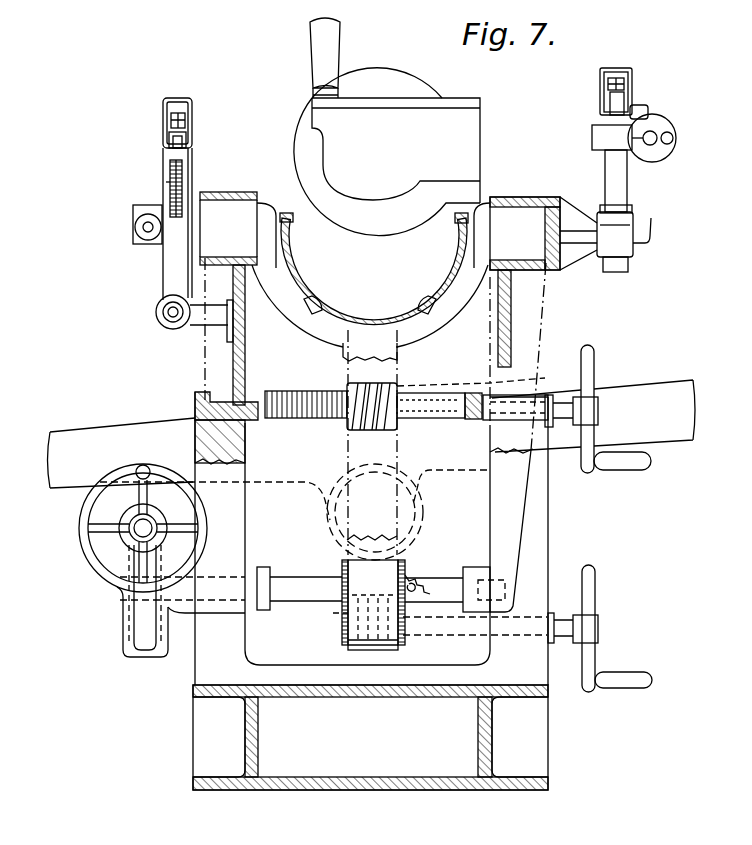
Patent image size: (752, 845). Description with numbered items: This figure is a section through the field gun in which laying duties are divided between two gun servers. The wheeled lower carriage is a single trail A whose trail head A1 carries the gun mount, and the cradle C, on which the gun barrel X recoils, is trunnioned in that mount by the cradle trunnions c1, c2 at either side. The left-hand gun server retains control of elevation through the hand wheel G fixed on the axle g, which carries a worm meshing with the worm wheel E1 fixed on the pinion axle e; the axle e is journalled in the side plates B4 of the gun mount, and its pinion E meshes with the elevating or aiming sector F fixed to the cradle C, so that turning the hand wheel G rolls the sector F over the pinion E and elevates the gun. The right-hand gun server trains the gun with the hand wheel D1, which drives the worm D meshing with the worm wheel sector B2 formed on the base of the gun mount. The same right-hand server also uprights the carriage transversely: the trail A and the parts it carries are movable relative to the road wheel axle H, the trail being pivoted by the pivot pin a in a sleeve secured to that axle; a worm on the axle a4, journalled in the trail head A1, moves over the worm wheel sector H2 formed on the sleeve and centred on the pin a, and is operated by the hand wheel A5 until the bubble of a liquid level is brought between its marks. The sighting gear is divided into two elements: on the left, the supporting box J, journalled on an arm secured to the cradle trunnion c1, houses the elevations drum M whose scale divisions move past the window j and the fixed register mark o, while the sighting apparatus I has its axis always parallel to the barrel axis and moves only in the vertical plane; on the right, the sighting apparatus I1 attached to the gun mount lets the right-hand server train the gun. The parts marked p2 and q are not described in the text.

The trail A is at (487, 731).
The trail head A1 is at (540, 493).
The hand wheel A5 is at (588, 657).
The pivot pin a is at (407, 520).
The worm axle a4 is at (440, 633).
The worm wheel sector B2 is at (324, 397).
The side plates B4 is at (260, 347).
The cradle C is at (443, 297).
The cradle trunnion c1 is at (255, 167).
The cradle trunnion c2 is at (525, 217).
The worm D is at (360, 417).
The hand wheel D1 is at (587, 363).
The pinion E is at (343, 612).
The worm wheel E1 is at (130, 635).
The pinion axle e is at (300, 580).
The elevating sector F is at (360, 567).
The hand wheel G is at (103, 568).
The axle g is at (140, 532).
The road wheel axle H is at (138, 428).
The worm wheel sector H2 is at (427, 567).
The sighting apparatus I is at (172, 120).
The sighting apparatus I1 is at (620, 178).
The supporting box J is at (170, 263).
The window j is at (173, 182).
The elevations drum M is at (182, 170).
The register mark o is at (182, 187).
The roller p2 is at (158, 320).
The bearing q is at (150, 232).
The gun barrel X is at (472, 140).